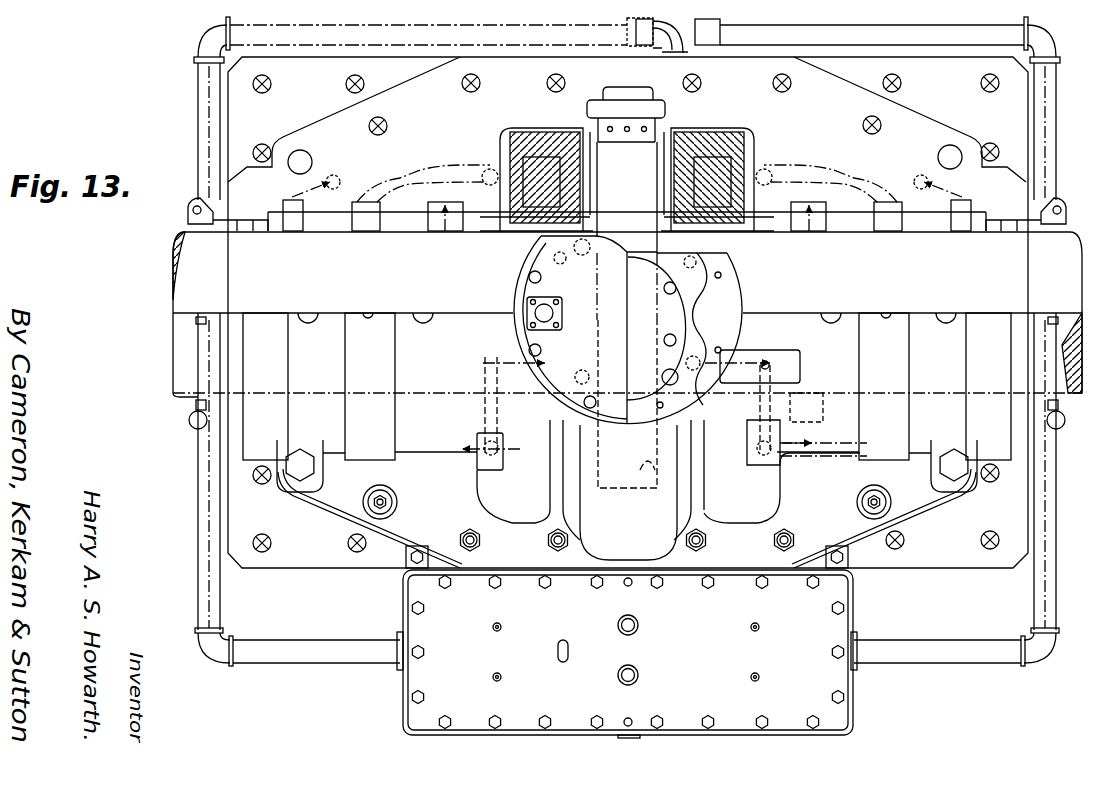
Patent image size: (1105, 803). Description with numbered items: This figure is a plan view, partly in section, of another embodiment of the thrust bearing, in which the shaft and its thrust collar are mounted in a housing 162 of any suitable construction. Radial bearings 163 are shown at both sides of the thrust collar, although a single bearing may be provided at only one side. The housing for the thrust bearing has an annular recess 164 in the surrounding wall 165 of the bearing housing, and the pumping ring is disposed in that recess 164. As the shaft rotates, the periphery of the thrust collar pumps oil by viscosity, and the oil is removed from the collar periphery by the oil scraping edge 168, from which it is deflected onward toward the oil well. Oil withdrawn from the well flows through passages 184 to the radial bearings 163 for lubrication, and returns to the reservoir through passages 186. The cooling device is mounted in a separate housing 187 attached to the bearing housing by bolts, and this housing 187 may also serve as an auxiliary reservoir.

The housing 162 is at (433, 443).
The radial bearings 163 is at (319, 304).
The annular recess 164 is at (652, 478).
The surrounding wall 165 is at (588, 504).
The oil scraping edge 168 is at (549, 364).
The passages 184 is at (495, 420).
The passages 186 is at (973, 187).
The separate housing 187 is at (452, 693).